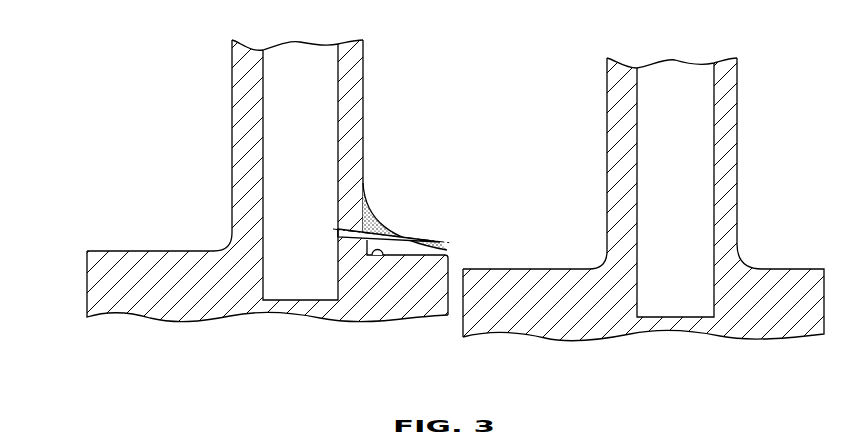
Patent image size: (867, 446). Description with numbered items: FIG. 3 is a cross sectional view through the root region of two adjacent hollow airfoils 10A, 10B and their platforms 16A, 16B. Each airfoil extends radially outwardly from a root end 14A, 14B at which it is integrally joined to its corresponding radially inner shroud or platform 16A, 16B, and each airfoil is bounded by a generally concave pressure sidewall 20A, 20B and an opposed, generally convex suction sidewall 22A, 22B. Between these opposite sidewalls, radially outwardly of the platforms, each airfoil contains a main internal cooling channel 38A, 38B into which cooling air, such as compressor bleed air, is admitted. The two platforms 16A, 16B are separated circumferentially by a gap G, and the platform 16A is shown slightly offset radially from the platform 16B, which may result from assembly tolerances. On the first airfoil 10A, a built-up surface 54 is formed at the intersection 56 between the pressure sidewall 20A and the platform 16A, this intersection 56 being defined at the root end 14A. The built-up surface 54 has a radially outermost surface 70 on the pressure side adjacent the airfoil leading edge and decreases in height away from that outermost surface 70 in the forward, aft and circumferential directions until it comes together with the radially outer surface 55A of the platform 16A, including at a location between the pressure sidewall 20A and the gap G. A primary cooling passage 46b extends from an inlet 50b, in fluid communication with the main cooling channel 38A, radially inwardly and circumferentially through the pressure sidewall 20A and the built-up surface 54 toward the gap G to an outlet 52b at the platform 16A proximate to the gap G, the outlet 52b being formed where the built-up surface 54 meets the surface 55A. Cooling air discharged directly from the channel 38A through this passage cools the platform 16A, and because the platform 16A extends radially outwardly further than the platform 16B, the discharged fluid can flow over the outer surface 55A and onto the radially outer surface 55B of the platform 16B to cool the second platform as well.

The first airfoil 10A is at (231, 113).
The second airfoil 10B is at (606, 130).
The main internal cooling channel 38A is at (295, 62).
The main internal cooling channel 38B is at (676, 77).
The pressure sidewall 20A is at (352, 136).
The pressure sidewall 20B is at (727, 136).
The suction sidewall 22A is at (240, 186).
The suction sidewall 22B is at (610, 186).
The root end 14A is at (223, 241).
The root end 14B is at (599, 253).
The radially outer surface 55A is at (132, 250).
The radially outer surface 55B is at (495, 268).
The platform 16A is at (98, 272).
The platform 16B is at (778, 283).
The radially outermost surface 70 is at (372, 172).
The built-up surface 54 is at (368, 193).
The inlet 50b is at (333, 228).
The second primary cooling passage 46b is at (365, 236).
The outlet 52b is at (432, 238).
The intersection 56 is at (378, 249).
The gap G is at (458, 265).